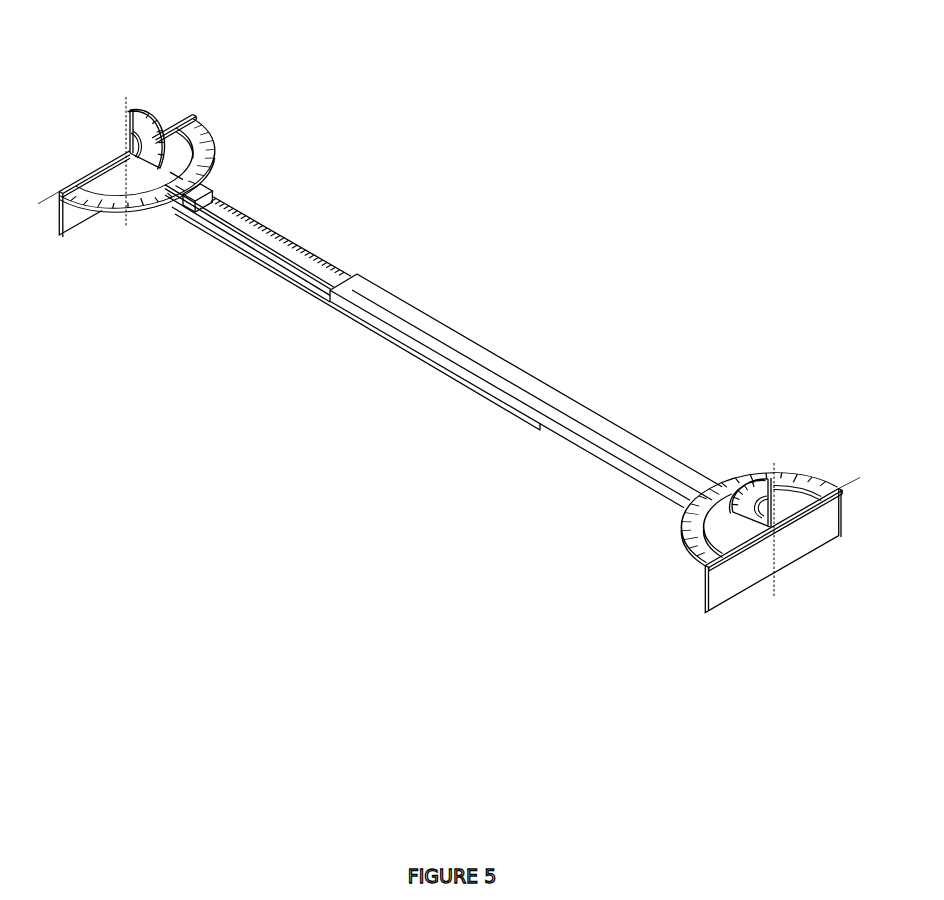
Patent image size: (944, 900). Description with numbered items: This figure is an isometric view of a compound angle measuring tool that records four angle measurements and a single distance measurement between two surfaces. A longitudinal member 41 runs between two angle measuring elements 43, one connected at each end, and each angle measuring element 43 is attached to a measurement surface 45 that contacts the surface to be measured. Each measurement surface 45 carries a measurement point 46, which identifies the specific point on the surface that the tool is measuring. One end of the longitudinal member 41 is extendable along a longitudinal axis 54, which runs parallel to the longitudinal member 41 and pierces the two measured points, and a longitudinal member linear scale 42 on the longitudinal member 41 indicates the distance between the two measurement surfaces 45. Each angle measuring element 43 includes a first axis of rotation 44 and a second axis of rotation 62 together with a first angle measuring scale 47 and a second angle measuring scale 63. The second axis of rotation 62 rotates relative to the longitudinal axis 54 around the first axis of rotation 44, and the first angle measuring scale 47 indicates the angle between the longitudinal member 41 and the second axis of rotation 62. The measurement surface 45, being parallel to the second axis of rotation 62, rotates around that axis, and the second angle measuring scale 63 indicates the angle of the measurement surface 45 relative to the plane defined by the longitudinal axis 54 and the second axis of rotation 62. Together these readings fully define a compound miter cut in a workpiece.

The longitudinal member 41 is at (461, 324).
The longitudinal member linear scale 42 is at (287, 237).
The angle measuring element 43 is at (92, 215).
The first axis of rotation 44 is at (128, 100).
The measurement surface 45 is at (58, 218).
The measurement point 46 is at (116, 145).
The first angle measuring scale 47 is at (152, 213).
The longitudinal axis 54 is at (402, 331).
The second axis of rotation 62 is at (214, 105).
The second angle measuring scale 63 is at (160, 121).